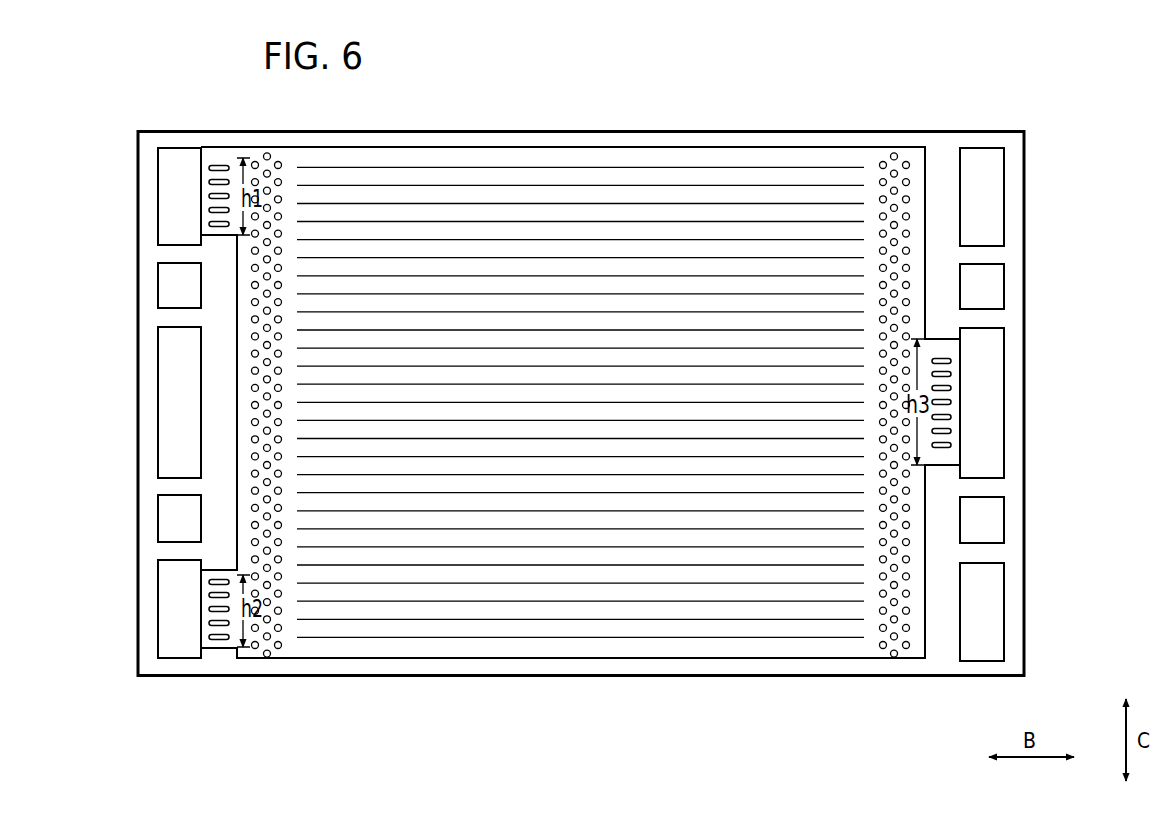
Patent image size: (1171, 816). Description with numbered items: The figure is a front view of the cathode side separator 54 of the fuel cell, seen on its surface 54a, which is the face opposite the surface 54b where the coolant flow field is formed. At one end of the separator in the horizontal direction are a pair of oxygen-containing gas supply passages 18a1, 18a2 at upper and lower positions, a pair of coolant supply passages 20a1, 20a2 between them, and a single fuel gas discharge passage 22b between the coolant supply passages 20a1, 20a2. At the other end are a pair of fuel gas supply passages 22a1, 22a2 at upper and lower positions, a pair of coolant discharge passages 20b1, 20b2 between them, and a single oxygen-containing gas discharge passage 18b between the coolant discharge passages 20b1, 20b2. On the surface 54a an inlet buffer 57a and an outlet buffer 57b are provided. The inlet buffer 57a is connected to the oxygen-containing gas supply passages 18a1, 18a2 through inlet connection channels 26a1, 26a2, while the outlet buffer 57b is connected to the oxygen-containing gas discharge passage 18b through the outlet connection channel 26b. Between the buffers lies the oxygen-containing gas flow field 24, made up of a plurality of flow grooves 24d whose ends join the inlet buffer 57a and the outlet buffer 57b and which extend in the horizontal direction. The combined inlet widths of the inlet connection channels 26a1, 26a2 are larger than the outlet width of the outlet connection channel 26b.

The cathode side separator 54 is at (846, 74).
The surface 54a is at (853, 667).
The surface 54b is at (908, 663).
The oxygen-containing gas flow field 24 is at (586, 183).
The flow grooves 24d is at (430, 178).
The inlet buffer 57a is at (267, 173).
The outlet buffer 57b is at (907, 165).
The inlet connection channel 26a1 is at (219, 173).
The inlet connection channel 26a2 is at (219, 640).
The outlet connection channel 26b is at (946, 417).
The oxygen-containing gas supply passage 18a1 is at (170, 177).
The oxygen-containing gas supply passage 18a2 is at (170, 630).
The oxygen-containing gas discharge passage 18b is at (990, 357).
The coolant supply passage 20a1 is at (170, 275).
The coolant supply passage 20a2 is at (170, 533).
The coolant discharge passage 20b1 is at (990, 275).
The coolant discharge passage 20b2 is at (990, 533).
The fuel gas discharge passage 22b is at (170, 357).
The fuel gas supply passage 22a1 is at (990, 178).
The fuel gas supply passage 22a2 is at (990, 632).